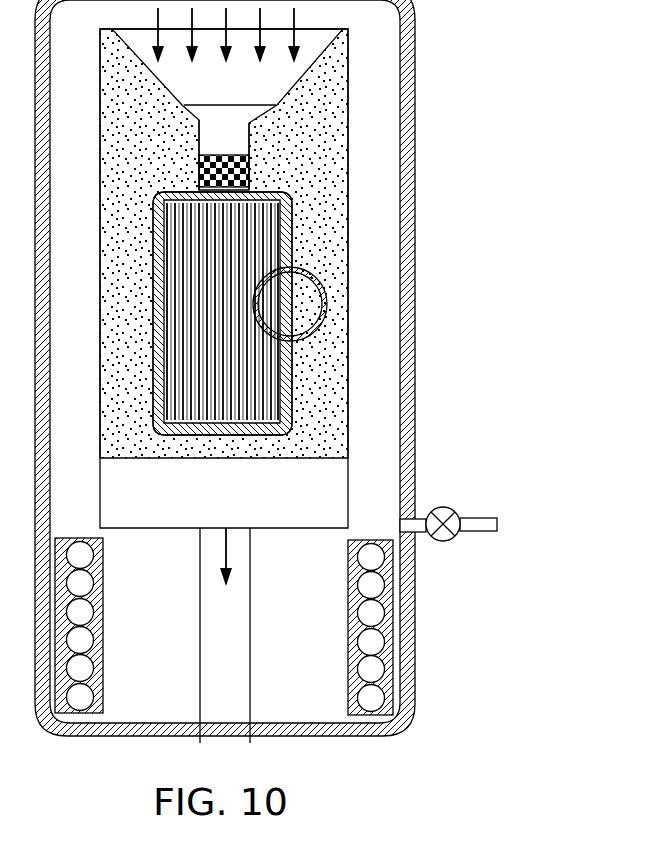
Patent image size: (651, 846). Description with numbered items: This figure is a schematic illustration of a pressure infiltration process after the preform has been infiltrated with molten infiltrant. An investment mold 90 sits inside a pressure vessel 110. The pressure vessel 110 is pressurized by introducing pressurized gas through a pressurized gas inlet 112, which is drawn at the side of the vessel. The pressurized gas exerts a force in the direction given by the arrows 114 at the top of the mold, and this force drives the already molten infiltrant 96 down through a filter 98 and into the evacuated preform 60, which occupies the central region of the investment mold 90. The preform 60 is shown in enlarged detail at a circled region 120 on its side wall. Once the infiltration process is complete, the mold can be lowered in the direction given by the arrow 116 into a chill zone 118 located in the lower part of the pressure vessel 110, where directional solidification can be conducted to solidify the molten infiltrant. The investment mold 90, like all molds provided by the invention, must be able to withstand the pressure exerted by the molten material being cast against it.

The evacuated preform 60 is at (258, 418).
The investment mold 90 is at (338, 76).
The molten infiltrant 96 is at (241, 142).
The filter 98 is at (247, 176).
The pressure vessel 110 is at (430, 159).
The pressurized gas inlet 112 is at (488, 533).
The arrows 114 is at (294, 15).
The arrow 116 is at (230, 579).
The chill zone 118 is at (179, 658).
The detail region 120 is at (327, 305).